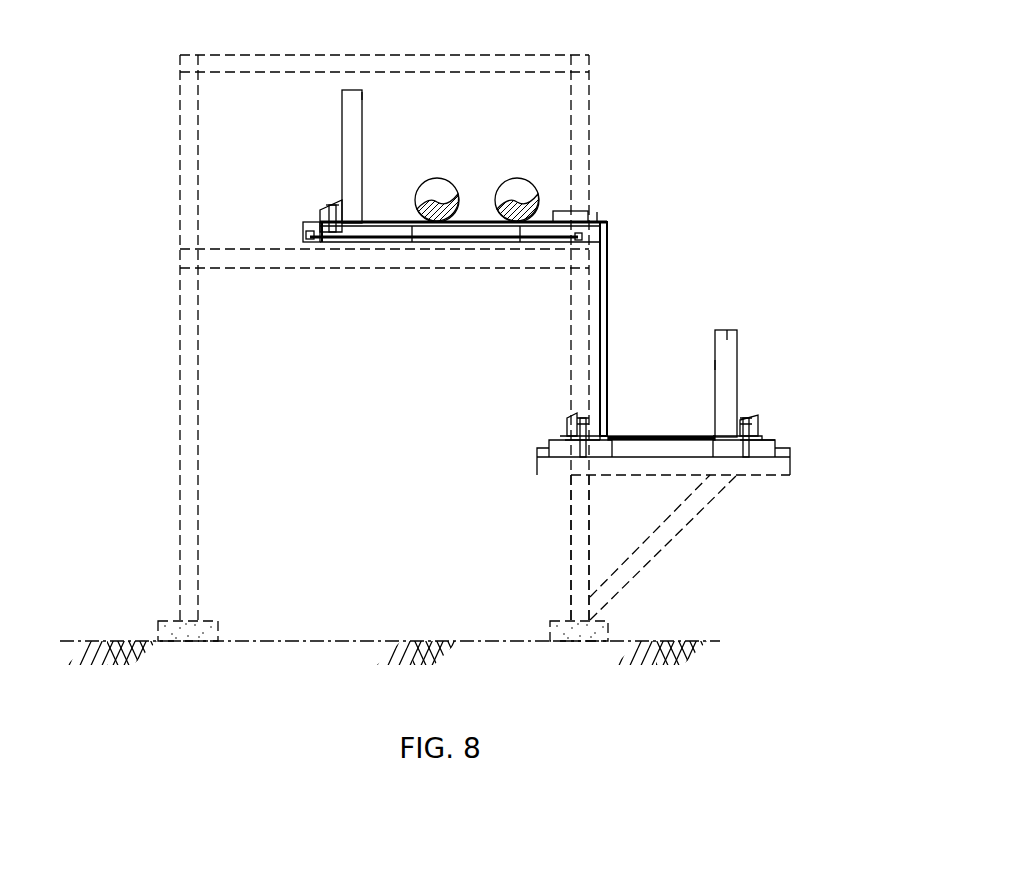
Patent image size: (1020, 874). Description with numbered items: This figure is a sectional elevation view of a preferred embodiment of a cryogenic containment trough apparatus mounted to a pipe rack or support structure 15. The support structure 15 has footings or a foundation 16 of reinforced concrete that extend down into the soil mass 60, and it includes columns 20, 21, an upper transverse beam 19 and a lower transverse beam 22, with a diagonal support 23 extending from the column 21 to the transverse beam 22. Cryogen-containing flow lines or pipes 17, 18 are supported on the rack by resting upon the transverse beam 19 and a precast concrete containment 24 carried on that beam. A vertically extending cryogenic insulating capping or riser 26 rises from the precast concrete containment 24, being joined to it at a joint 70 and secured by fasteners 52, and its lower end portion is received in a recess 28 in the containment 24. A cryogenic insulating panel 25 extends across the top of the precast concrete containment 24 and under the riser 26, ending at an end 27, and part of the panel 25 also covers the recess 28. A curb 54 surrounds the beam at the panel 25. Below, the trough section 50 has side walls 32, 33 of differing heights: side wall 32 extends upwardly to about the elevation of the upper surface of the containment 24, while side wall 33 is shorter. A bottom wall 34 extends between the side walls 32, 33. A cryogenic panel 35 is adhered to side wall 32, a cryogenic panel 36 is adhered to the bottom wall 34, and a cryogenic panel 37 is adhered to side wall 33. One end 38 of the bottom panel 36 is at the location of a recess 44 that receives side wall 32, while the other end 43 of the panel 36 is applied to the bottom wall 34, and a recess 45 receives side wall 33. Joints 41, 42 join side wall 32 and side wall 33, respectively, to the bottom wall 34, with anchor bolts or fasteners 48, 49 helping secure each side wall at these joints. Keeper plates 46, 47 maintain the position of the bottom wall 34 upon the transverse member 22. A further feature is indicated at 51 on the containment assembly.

The pipe rack or support structure 15 is at (445, 47).
The footings or foundation 16 is at (220, 625).
The flow line or pipe 17 is at (437, 182).
The flow line or pipe 18 is at (518, 182).
The transverse beam 19 is at (272, 270).
The column 20 is at (186, 354).
The column 21 is at (571, 575).
The transverse beam 22 is at (745, 470).
The diagonal support 23 is at (663, 548).
The precast concrete containment 24 is at (395, 225).
The cryogenic insulating panel 25 is at (362, 100).
The cryogenic insulating capping or riser 26 is at (345, 123).
The end 27 is at (318, 222).
The recess 28 is at (338, 212).
The side wall 32 is at (607, 232).
The side wall 33 is at (727, 340).
The bottom wall 34 is at (688, 458).
The cryogenic panel 35 is at (607, 290).
The cryogenic panel 36 is at (630, 436).
The cryogenic panel 37 is at (713, 368).
The end of panel 38 is at (565, 422).
The joint 41 is at (563, 406).
The joint 42 is at (760, 420).
The end of panel 43 is at (775, 420).
The recess 44 is at (583, 445).
The recess 45 is at (748, 440).
The keeper plate 46 is at (549, 443).
The keeper plate 47 is at (790, 452).
The anchor bolt or fastener 48 is at (578, 445).
The anchor bolt or fastener 49 is at (755, 440).
The trough section 50 is at (733, 360).
The slide bar 51 is at (478, 248).
The fastener 52 is at (335, 242).
The curb 54 is at (560, 210).
The soil mass 60 is at (115, 638).
The joint 70 is at (324, 242).